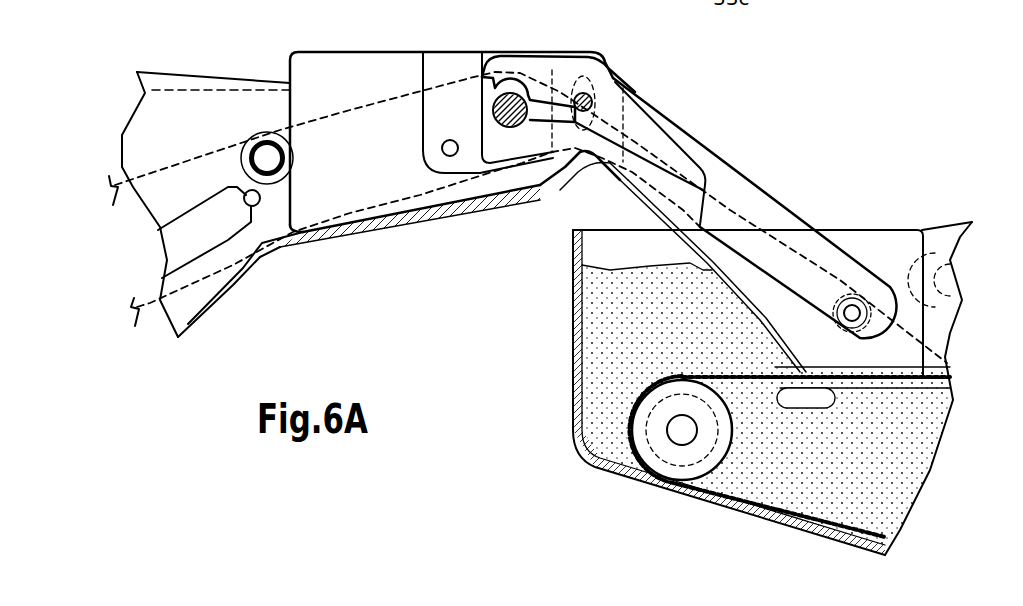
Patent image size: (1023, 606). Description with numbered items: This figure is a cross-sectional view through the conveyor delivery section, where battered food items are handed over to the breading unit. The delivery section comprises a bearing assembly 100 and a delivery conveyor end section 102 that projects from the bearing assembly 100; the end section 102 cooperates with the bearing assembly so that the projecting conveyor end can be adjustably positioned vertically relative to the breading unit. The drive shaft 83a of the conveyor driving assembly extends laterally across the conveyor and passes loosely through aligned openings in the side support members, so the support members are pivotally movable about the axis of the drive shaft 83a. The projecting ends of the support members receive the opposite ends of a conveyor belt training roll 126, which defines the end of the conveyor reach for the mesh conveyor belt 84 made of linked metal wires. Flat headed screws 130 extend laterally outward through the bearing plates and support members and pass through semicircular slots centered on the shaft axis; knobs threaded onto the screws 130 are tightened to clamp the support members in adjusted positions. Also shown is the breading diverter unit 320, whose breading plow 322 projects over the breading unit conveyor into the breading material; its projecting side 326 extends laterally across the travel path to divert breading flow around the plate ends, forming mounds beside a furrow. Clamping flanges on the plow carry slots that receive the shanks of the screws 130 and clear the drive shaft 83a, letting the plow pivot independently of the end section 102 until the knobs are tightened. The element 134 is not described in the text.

The bearing assembly 100 is at (412, 41).
The drive shaft 83a is at (485, 111).
The flat headed screws 130 is at (613, 83).
The delivery conveyor end section 102 is at (736, 148).
The lever bar 134 is at (763, 212).
The breading diverter unit 320 is at (612, 188).
The breading plow 322 is at (683, 232).
The conveyor belt 84 is at (813, 263).
The projecting side 326 is at (812, 412).
The conveyor belt training roll 126 is at (950, 363).